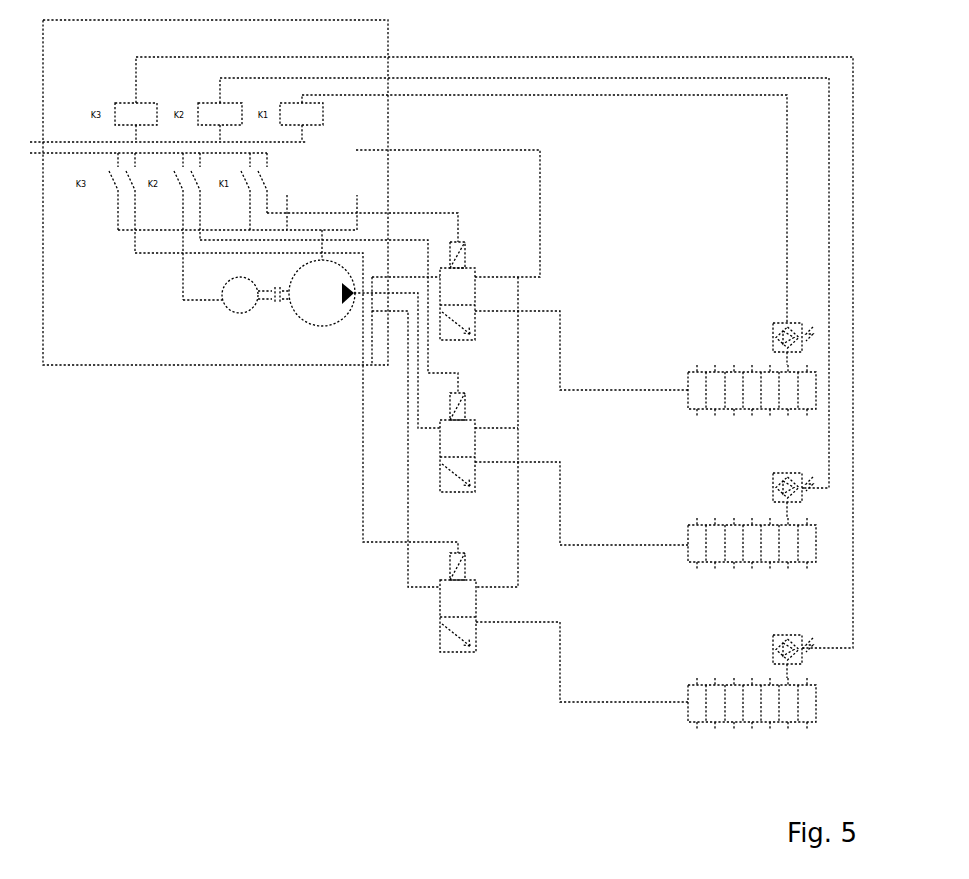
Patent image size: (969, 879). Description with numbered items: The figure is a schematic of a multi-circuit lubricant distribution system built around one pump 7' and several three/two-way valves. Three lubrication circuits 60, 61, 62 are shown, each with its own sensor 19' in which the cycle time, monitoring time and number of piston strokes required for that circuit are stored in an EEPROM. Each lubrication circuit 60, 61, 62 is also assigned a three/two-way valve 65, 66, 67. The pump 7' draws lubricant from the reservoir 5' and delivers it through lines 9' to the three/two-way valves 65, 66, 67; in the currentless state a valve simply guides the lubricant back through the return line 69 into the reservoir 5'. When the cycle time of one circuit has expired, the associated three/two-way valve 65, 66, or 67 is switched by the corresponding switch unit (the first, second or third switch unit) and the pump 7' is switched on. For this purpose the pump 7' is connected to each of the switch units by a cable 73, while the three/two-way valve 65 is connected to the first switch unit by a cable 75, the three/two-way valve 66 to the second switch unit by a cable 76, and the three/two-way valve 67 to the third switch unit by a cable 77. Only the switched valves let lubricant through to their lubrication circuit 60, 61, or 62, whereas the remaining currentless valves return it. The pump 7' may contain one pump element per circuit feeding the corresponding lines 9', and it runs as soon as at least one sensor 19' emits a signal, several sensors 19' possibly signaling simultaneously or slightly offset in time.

The reservoir 5' is at (322, 205).
The pump 7' is at (306, 340).
The lines 9' is at (380, 432).
The sensor 19' is at (765, 449).
The lubrication circuit 60 is at (731, 320).
The lubrication circuit 61 is at (731, 500).
The lubrication circuit 62 is at (732, 677).
The 3/2-way valve 65 is at (472, 268).
The 3/2-way valve 66 is at (440, 487).
The 3/2-way valve 67 is at (439, 640).
The return line 69 is at (542, 163).
The cable 73 is at (183, 297).
The cable 75 is at (415, 213).
The cable 76 is at (457, 377).
The cable 77 is at (363, 541).